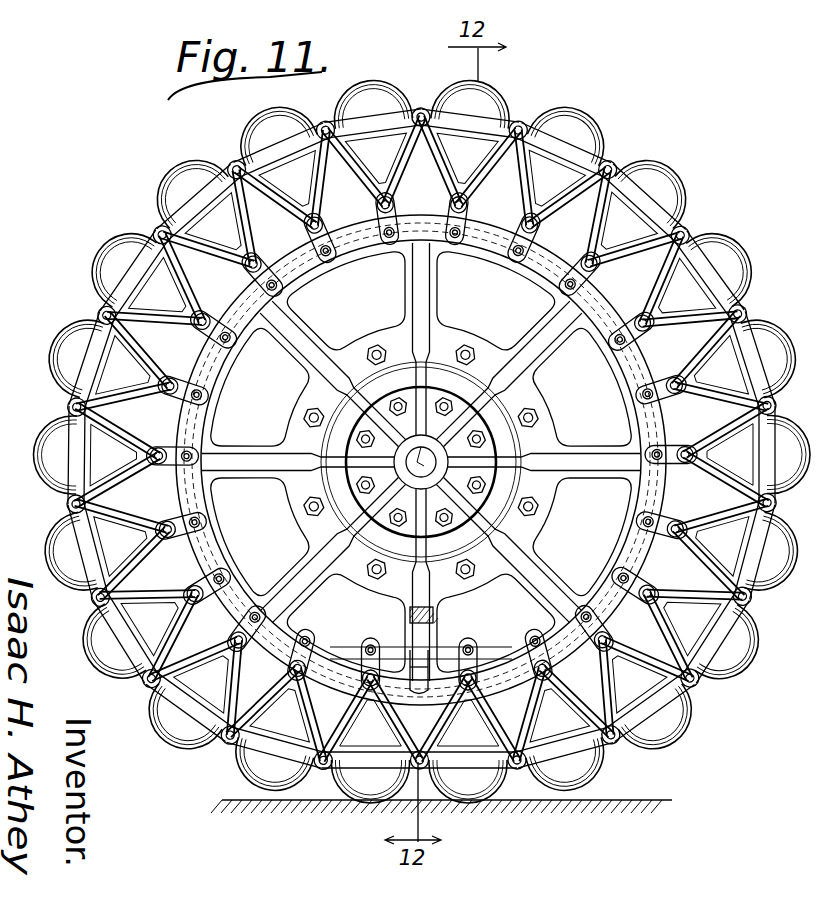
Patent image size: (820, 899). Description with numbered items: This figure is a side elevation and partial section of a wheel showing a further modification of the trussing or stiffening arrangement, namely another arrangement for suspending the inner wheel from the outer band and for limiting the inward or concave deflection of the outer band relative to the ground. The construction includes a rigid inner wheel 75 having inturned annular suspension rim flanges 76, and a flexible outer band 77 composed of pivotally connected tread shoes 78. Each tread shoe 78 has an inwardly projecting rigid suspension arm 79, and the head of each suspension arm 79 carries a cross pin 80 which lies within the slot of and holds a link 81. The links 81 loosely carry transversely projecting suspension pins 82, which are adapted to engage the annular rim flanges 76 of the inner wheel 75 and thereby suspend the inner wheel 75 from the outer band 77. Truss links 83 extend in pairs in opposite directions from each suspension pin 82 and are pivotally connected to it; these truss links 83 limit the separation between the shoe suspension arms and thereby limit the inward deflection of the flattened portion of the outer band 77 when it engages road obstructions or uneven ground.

The rigid inner wheel 75 is at (349, 366).
The inturned annular suspension rim flanges 76 is at (572, 292).
The flexible outer band 77 is at (56, 346).
The tread shoes 78 is at (408, 439).
The suspension arm 79 is at (424, 446).
The cross pin 80 is at (424, 436).
The link 81 is at (421, 441).
The suspension pins 82 is at (421, 441).
The truss links 83 is at (486, 592).